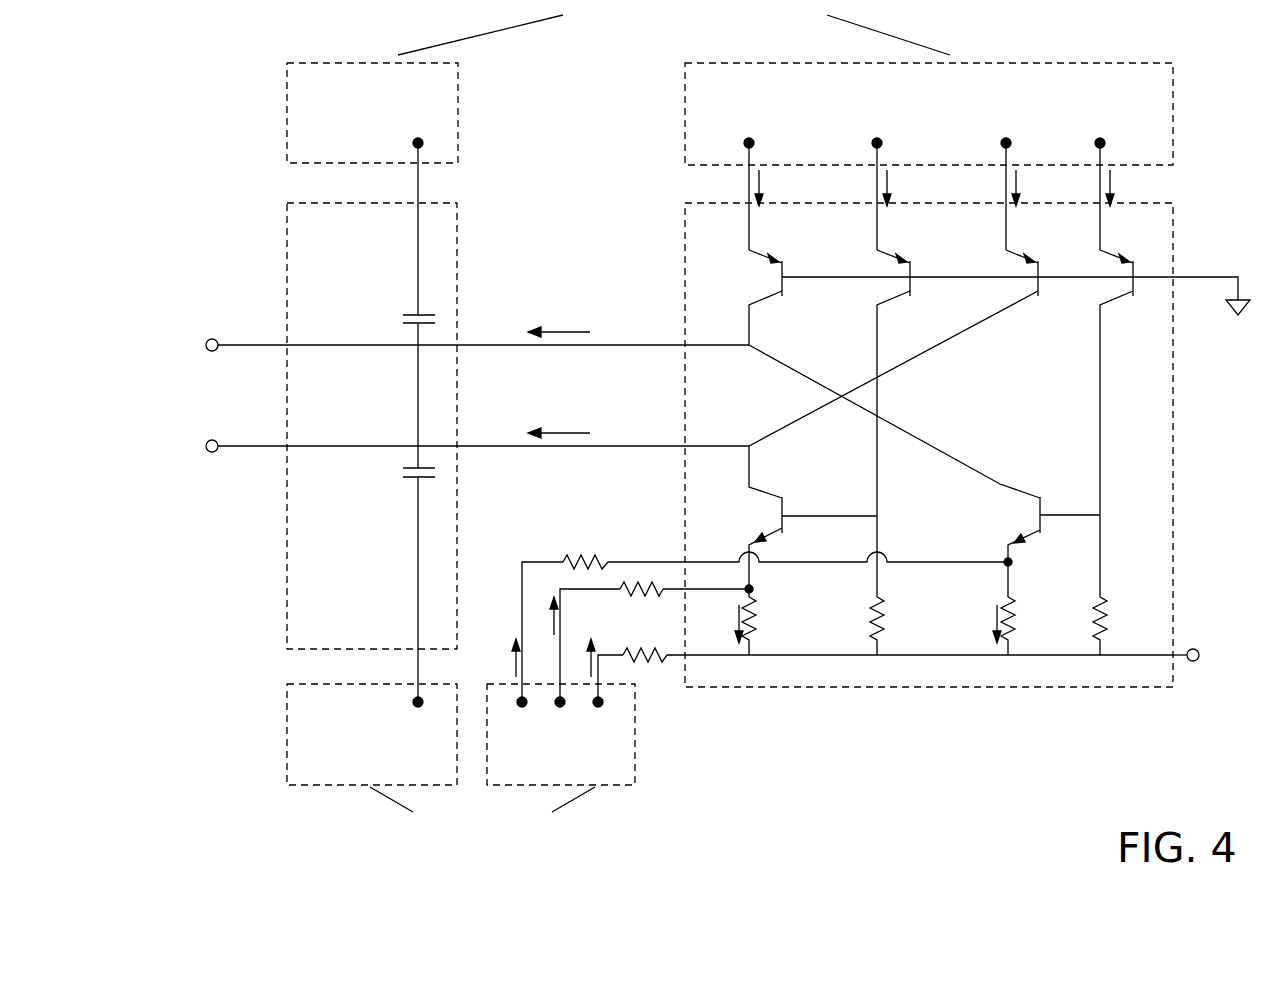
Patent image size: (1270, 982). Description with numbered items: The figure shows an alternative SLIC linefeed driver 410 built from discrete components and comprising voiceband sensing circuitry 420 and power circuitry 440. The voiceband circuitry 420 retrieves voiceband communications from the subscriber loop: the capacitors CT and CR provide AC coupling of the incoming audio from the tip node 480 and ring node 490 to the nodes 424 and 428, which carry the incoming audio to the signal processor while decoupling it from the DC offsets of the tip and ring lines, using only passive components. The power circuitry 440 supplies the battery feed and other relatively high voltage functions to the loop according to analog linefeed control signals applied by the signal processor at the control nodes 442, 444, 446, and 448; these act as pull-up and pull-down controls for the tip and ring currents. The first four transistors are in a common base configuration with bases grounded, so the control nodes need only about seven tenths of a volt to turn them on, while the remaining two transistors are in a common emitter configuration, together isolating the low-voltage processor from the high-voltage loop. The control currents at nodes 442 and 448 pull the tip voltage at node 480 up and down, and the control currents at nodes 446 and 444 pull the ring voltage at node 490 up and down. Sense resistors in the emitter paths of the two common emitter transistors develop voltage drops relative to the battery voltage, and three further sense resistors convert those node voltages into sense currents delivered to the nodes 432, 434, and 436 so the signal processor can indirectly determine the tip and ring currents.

The SLIC linefeed driver 410 is at (238, 152).
The voiceband sensing circuitry 420 is at (287, 368).
The node 424 is at (419, 160).
The node 428 is at (419, 692).
The node 432 is at (524, 649).
The node 434 is at (583, 662).
The node 436 is at (605, 687).
The power circuitry 440 is at (936, 687).
The node 442 is at (757, 183).
The node 444 is at (885, 183).
The node 446 is at (1014, 183).
The node 448 is at (1108, 183).
The tip node 480 is at (474, 322).
The ring node 490 is at (471, 473).